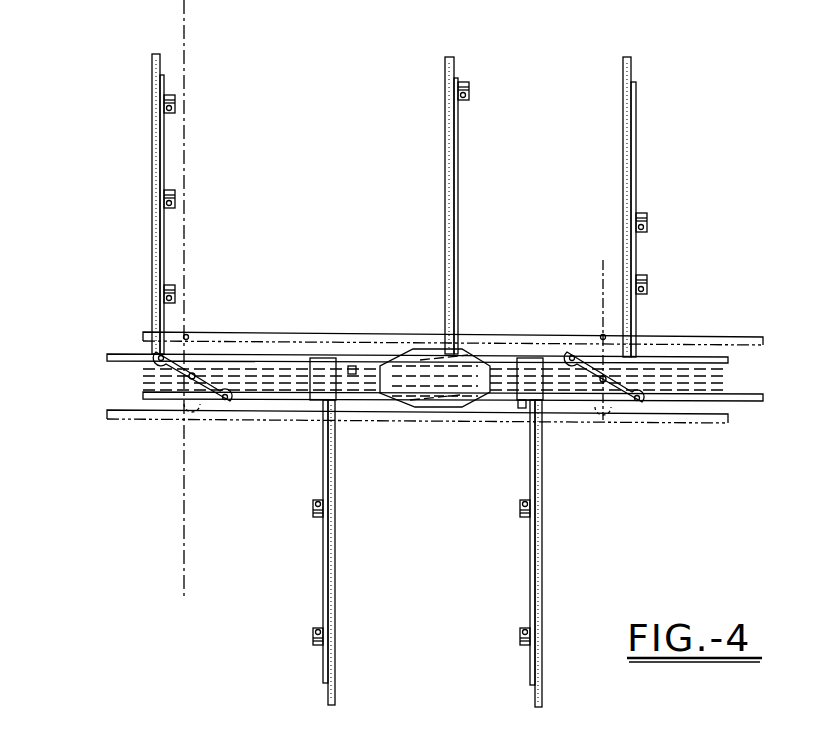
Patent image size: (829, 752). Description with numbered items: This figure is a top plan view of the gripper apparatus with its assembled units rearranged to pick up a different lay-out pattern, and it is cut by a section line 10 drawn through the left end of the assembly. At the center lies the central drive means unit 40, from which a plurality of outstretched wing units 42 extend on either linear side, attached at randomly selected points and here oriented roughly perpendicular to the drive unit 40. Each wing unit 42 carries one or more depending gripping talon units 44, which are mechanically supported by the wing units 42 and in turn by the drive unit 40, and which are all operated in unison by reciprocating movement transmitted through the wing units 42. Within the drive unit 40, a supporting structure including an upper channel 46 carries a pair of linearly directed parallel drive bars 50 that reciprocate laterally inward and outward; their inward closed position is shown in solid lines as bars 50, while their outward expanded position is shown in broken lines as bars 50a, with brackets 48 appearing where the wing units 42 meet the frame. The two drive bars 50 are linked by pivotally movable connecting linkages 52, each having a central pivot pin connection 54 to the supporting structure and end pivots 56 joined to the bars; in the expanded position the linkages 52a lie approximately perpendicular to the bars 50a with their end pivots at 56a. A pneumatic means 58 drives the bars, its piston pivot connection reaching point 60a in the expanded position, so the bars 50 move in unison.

The section line 10- 10 is at (160, 14).
The central drive means unit 40 is at (143, 397).
The wing unit 42 is at (152, 144).
The gripping talon unit 44 is at (175, 107).
The upper channel 46 is at (143, 375).
The bracket 48 is at (318, 395).
The drive bar 50 is at (728, 360).
The drive bar in outward expanded position 50a is at (143, 336).
The connecting linkage 52 is at (200, 380).
The connecting linkage in expanded position 52a is at (470, 356).
The central pivot pin connection 54 is at (176, 387).
The end pivot 56 is at (228, 402).
The end pivot in expanded position 56a is at (188, 335).
The pneumatic means 58 is at (352, 370).
The pivot connection point in outward expanded position 60a is at (395, 408).